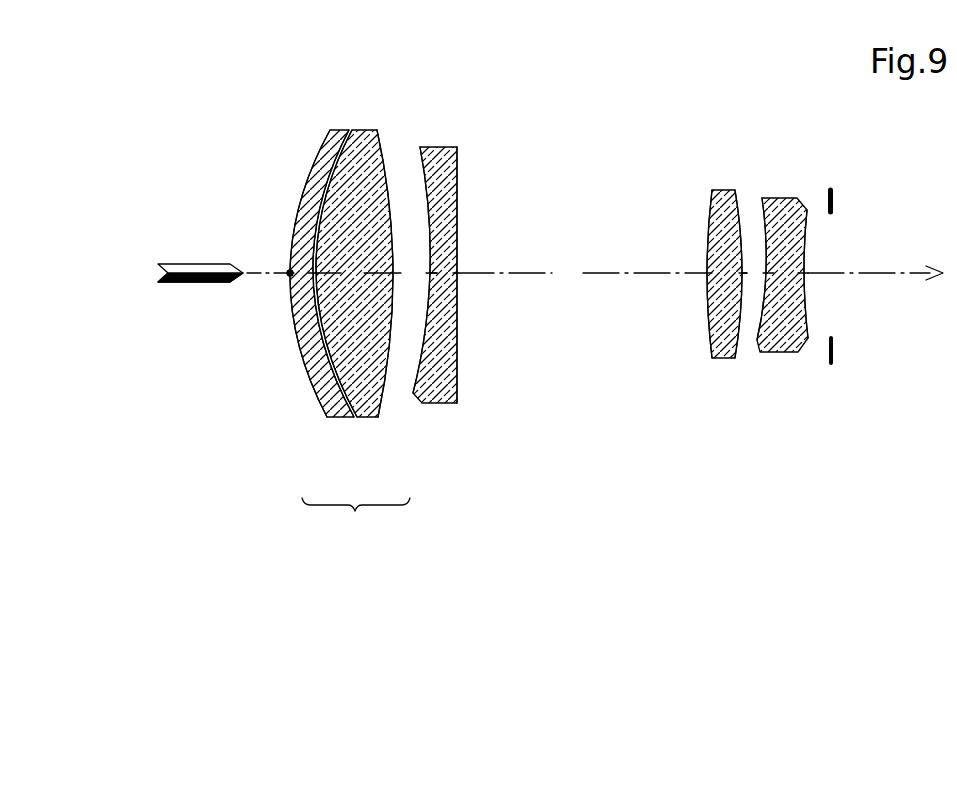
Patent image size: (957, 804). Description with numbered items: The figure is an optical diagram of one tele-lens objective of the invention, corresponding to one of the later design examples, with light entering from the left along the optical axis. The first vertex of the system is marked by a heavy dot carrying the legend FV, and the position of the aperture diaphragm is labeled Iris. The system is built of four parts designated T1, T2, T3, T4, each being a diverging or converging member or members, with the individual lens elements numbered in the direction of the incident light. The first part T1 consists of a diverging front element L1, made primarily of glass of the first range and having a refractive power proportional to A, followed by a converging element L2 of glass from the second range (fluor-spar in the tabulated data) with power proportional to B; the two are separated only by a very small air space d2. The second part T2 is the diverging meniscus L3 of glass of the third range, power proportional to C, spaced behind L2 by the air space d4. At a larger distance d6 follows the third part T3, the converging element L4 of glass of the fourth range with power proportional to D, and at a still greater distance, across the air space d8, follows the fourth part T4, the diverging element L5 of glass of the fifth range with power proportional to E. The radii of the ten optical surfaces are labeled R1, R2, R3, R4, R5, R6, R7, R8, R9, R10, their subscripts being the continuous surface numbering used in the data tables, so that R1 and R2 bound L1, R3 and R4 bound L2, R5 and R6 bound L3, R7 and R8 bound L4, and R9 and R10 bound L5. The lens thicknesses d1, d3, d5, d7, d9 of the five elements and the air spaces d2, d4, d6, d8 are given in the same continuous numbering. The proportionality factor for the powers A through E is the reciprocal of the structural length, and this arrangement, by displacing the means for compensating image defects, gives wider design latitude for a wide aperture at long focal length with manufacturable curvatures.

The first lens element L1 is at (340, 417).
The second lens element L2 is at (368, 417).
The third lens element L3 is at (437, 403).
The fourth lens element L4 is at (720, 358).
The fifth lens element L5 is at (780, 352).
The radius of first optical surface R1 is at (318, 147).
The radius of second optical surface R2 is at (348, 131).
The radius of third optical surface R3 is at (360, 131).
The radius of fourth optical surface R4 is at (379, 146).
The radius of fifth optical surface R5 is at (418, 165).
The radius of sixth optical surface R6 is at (458, 157).
The radius of seventh optical surface R7 is at (711, 207).
The radius of eighth optical surface R8 is at (735, 199).
The radius of ninth optical surface R9 is at (761, 207).
The radius of tenth optical surface R10 is at (807, 214).
The first lens thickness d1 is at (302, 279).
The first air space d2 is at (307, 258).
The second lens thickness d3 is at (355, 275).
The second air space d4 is at (415, 276).
The third lens thickness d5 is at (444, 280).
The third air space d6 is at (549, 279).
The fourth lens thickness d7 is at (727, 279).
The fourth air space d8 is at (754, 285).
The fifth lens thickness d9 is at (787, 279).
The first part T1 is at (355, 515).
The second part T2 is at (437, 502).
The third part T3 is at (720, 445).
The fourth part T4 is at (777, 437).
The first vertex FV is at (290, 274).
The diaphragm location Iris is at (832, 344).